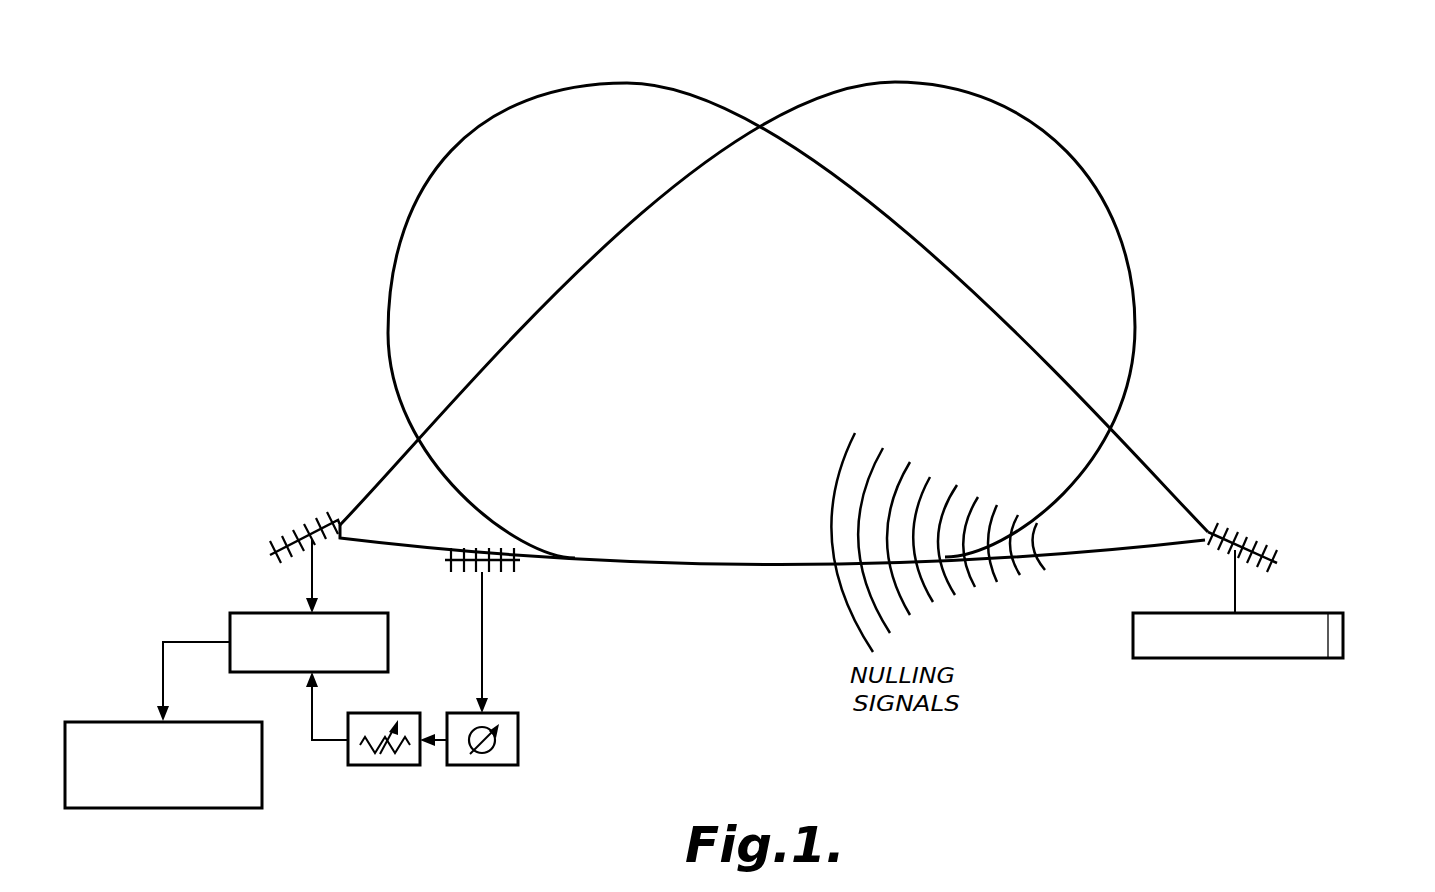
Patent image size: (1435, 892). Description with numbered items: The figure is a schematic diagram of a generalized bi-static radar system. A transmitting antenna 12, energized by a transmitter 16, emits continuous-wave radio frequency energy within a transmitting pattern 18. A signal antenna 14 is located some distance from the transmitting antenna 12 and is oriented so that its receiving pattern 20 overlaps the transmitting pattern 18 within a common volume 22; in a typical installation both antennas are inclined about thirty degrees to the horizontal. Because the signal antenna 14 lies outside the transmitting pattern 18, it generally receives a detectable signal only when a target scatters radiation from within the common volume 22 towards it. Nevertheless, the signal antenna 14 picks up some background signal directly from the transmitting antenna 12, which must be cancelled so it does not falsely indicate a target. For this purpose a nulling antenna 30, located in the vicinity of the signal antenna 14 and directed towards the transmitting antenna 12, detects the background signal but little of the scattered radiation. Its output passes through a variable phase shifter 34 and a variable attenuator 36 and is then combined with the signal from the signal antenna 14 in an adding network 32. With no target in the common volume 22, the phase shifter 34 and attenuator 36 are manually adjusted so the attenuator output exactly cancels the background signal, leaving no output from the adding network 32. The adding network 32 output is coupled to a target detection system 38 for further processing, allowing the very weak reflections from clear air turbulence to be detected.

The transmitting antenna 12 is at (1250, 524).
The signal antenna 14 is at (286, 528).
The transmitter 16 is at (1343, 638).
The transmitting pattern 18 is at (616, 82).
The receiving pattern 20 is at (913, 82).
The common volume 22 is at (750, 291).
The nulling antenna 30 is at (526, 571).
The adding network 32 is at (371, 612).
The variable phase shifter 34 is at (518, 742).
The variable attenuator 36 is at (388, 766).
The target detection system 38 is at (262, 786).